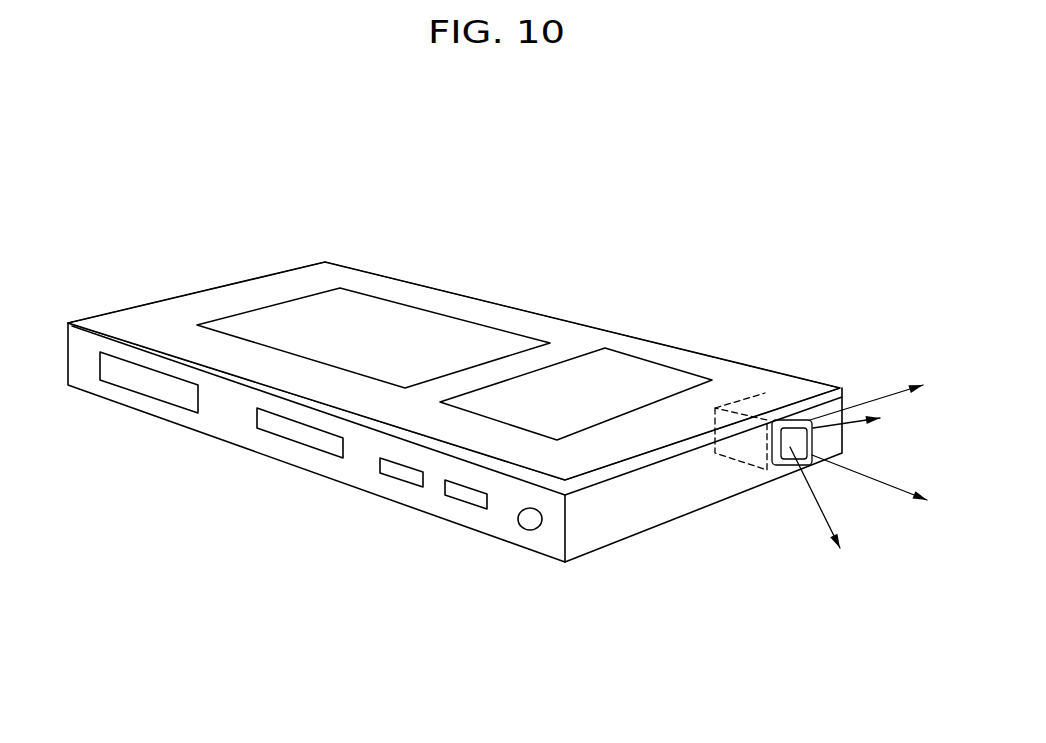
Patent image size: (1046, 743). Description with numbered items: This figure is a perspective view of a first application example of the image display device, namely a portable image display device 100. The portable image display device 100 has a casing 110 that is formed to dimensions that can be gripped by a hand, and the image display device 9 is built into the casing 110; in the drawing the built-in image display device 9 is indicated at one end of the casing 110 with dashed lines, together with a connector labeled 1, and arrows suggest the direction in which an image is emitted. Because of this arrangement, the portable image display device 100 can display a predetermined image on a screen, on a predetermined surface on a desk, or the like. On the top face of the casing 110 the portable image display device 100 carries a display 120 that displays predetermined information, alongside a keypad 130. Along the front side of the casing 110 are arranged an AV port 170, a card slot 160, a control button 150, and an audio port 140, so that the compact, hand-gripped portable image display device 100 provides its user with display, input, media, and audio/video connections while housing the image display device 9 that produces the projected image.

The portable image display device 100 is at (687, 158).
The casing 110 is at (485, 313).
The display 120 is at (600, 370).
The keypad 130 is at (367, 320).
The audio port 140 is at (527, 521).
The control button 150 is at (462, 492).
The card slot 160 is at (298, 432).
The AV port 170 is at (145, 382).
The image display device 9 is at (767, 385).
The connector 1 is at (849, 466).